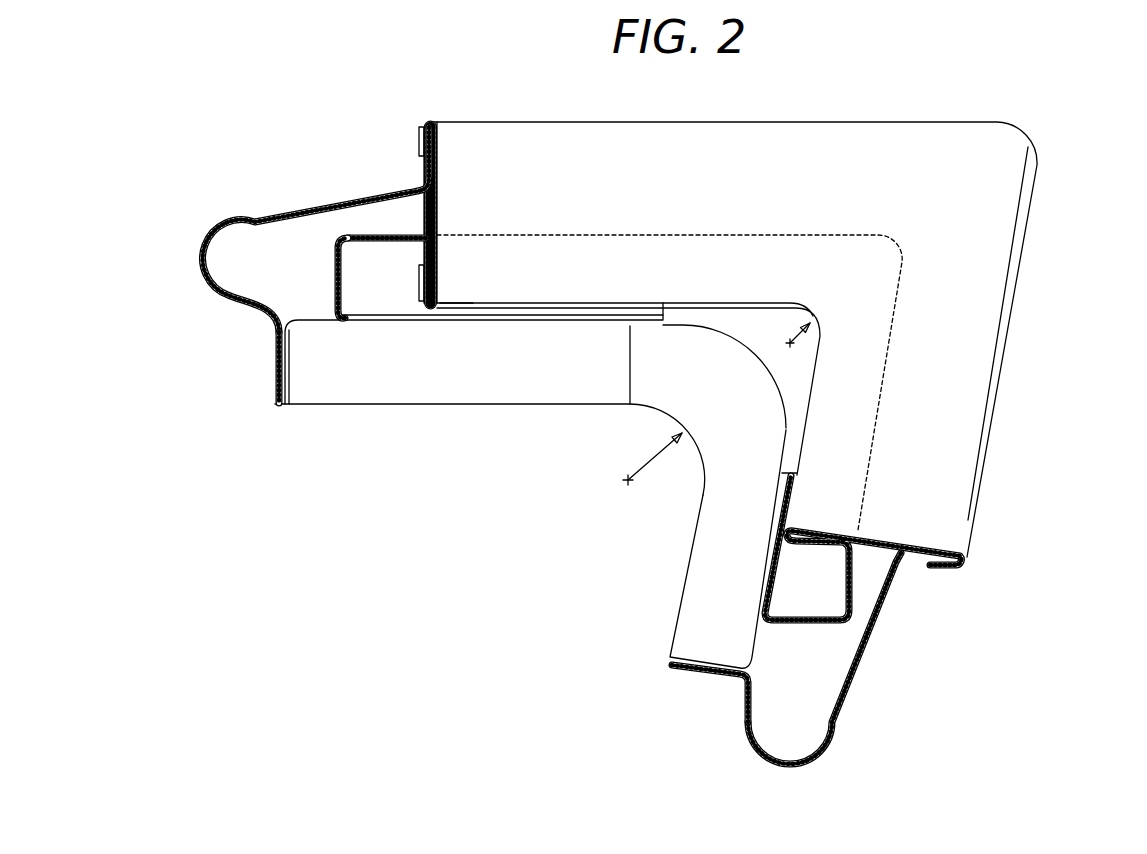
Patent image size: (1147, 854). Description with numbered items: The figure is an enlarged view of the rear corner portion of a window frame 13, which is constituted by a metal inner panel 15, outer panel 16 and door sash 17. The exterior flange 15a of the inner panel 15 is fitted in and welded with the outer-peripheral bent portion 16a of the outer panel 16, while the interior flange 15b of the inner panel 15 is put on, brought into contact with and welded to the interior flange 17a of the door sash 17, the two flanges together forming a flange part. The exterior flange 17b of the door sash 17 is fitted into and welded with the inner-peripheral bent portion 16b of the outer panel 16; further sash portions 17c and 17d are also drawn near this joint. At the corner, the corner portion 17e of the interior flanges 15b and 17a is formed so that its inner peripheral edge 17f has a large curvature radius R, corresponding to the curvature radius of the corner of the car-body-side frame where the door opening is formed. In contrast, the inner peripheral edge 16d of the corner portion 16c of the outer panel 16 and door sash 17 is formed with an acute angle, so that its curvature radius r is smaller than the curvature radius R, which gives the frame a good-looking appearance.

The window frame 13 is at (1019, 285).
The outer panel 16 is at (534, 143).
The outer-peripheral bent portion 16a is at (430, 130).
The inner-peripheral bent portion 16b is at (427, 290).
The corner portion 16c is at (1007, 223).
The inner peripheral edge 16d is at (818, 347).
The door sash 17 is at (333, 263).
The interior flange 17a is at (287, 385).
The exterior flange 17b is at (428, 295).
The bracket projecting portion 17c is at (374, 247).
The bracket projecting side portion 17d is at (334, 300).
The corner portion 17e is at (675, 403).
The inner peripheral edge 17f is at (697, 457).
The inner panel 15 is at (277, 213).
The exterior flange 15a is at (423, 143).
The interior flange 15b is at (276, 375).
The curvature radius R is at (652, 459).
The curvature radius r is at (798, 329).